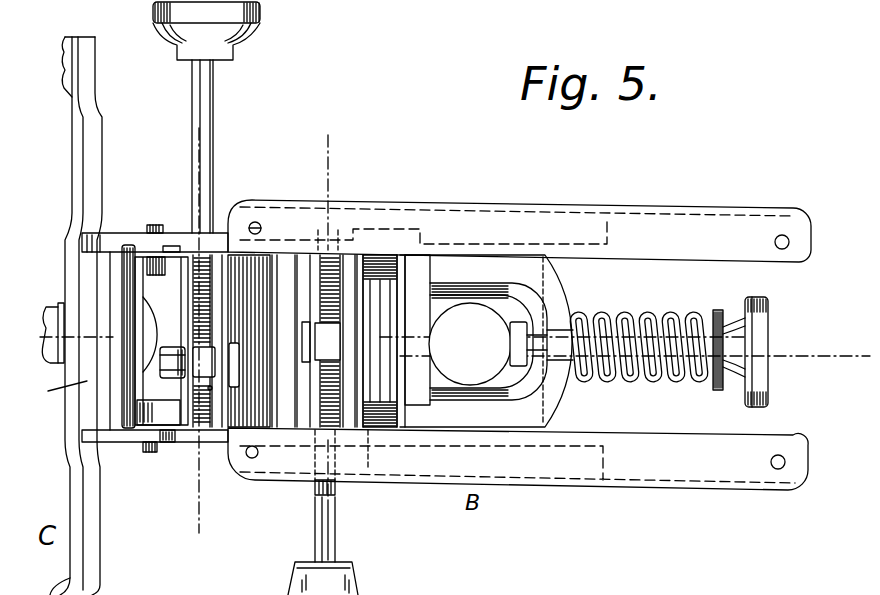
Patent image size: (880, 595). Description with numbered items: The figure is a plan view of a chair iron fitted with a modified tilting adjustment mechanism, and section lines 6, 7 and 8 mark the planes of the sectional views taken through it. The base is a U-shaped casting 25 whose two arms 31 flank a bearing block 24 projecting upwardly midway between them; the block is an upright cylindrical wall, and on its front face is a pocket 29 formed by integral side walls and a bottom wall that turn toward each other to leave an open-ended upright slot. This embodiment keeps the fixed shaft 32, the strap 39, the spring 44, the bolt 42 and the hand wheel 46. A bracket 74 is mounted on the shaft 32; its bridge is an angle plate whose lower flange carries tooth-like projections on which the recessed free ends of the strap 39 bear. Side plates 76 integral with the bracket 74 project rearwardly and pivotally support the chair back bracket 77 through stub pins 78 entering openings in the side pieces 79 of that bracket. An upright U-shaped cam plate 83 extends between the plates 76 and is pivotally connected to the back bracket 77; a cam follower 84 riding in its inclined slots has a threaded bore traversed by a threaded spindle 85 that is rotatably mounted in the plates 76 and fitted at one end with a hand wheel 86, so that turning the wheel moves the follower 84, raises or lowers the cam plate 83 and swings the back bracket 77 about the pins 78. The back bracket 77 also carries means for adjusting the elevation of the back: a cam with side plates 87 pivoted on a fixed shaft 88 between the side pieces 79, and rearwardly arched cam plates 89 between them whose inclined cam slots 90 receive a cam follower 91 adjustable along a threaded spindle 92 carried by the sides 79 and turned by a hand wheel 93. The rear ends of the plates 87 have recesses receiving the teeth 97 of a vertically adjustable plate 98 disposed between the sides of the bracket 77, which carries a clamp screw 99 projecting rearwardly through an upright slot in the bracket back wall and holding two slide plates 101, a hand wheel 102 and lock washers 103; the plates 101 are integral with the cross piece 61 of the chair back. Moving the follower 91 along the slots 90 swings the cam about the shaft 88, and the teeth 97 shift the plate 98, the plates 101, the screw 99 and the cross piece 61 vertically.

The section line 6- 6 is at (45, 342).
The section line 7- 7 is at (324, 159).
The section line 8- 8 is at (196, 147).
The bearing block 24 is at (470, 344).
The U-shaped casting 25 is at (430, 296).
The pocket 29 is at (513, 328).
The arm 31 is at (686, 258).
The fixed shaft 32 is at (410, 328).
The strap 39 is at (565, 271).
The bolt 42 is at (596, 316).
The spring 44 is at (645, 313).
The hand wheel 46 is at (768, 309).
The cross piece 61 is at (73, 168).
The bracket 74 is at (385, 350).
The side plates 76 is at (170, 446).
The chair back bracket 77 is at (118, 433).
The stub pins 78 is at (163, 228).
The side pieces 79 is at (173, 246).
The cam plate 83 is at (342, 392).
The cam follower 84 is at (338, 334).
The threaded spindle 85 is at (333, 497).
The hand wheel 86 is at (357, 590).
The side plates 87 is at (218, 440).
The fixed shaft 88 is at (277, 397).
The cam plates 89 is at (200, 410).
The cam slots 90 is at (182, 352).
The cam follower 91 is at (161, 376).
The threaded spindle 92 is at (213, 164).
The hand wheel 93 is at (180, 40).
The teeth 97 is at (148, 257).
The vertically adjustable plate 98 is at (103, 442).
The clamp screw 99 is at (141, 305).
The slide plates 101 is at (95, 378).
The hand wheel 102 is at (43, 306).
The lock washers 103 is at (61, 300).